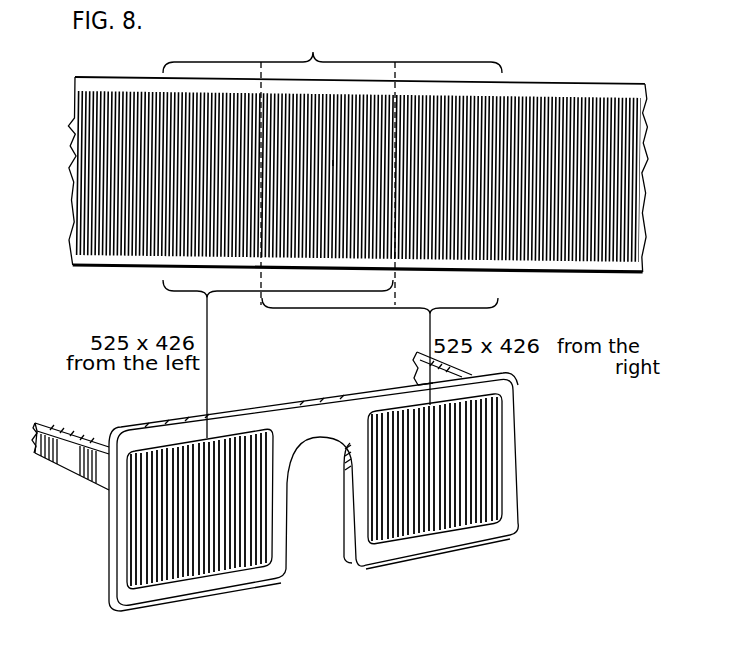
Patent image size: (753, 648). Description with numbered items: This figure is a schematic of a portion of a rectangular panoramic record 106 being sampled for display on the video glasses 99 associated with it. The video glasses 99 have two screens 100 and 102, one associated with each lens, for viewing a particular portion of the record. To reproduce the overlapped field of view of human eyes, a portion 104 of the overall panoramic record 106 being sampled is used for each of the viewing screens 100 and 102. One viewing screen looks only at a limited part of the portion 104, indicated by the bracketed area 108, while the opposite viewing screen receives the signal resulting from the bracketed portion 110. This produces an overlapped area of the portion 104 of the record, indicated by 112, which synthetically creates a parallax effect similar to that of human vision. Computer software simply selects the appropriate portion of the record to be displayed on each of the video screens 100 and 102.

The video glasses 99 is at (322, 493).
The screen 100 is at (443, 521).
The screen 102 is at (217, 563).
The portion of the panoramic record 104 is at (332, 166).
The panoramic record 106 is at (66, 104).
The bracketed area 108 is at (203, 296).
The bracketed portion 110 is at (434, 312).
The overlapped area 112 is at (335, 162).